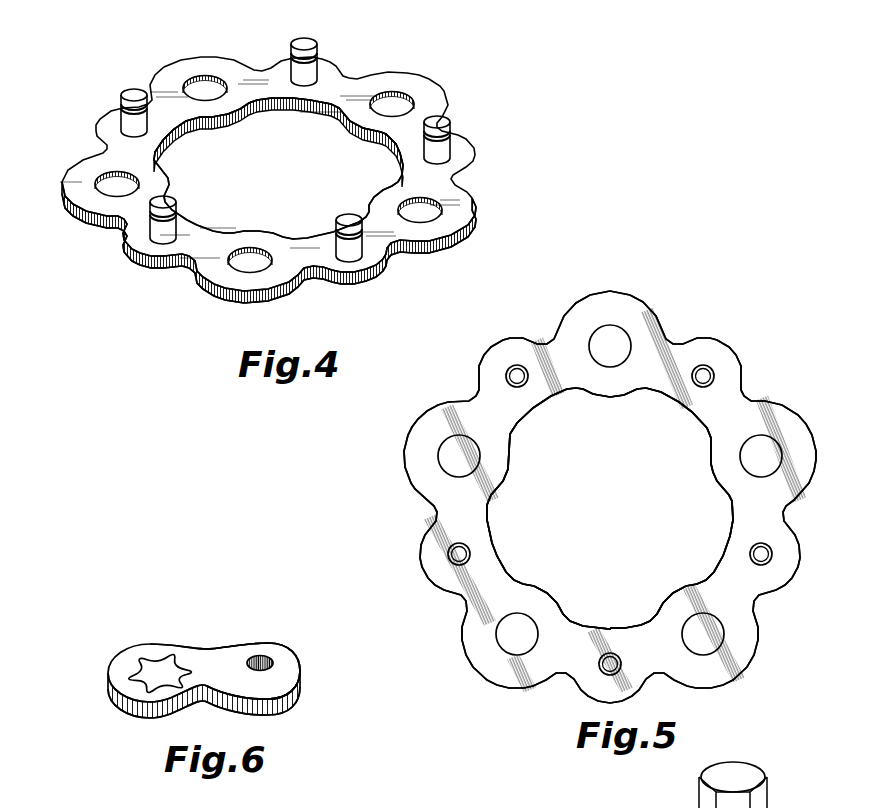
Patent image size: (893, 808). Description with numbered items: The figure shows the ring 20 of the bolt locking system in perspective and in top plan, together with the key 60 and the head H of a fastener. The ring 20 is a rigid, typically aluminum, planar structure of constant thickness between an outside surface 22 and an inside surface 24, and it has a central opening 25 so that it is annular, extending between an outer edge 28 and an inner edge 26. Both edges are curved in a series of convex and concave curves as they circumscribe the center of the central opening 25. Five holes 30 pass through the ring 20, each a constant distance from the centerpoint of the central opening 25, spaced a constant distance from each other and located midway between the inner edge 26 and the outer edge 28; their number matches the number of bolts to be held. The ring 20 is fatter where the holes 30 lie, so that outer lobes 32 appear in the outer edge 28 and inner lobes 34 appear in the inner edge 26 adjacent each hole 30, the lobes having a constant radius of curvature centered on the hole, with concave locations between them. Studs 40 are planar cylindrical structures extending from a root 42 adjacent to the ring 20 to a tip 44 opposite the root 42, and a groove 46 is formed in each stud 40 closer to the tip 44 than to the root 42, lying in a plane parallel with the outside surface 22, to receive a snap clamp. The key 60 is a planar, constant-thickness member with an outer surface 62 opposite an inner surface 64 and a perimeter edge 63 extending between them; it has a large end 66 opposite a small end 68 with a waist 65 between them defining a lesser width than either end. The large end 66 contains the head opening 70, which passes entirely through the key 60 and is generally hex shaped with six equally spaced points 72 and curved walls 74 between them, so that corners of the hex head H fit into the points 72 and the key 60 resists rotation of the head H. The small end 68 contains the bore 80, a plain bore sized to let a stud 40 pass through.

In FIG. 4, the ring 20 is at (288, 184).
In FIG. 5, the ring 20 is at (619, 459).
In FIG. 4, the outside surface 22 is at (250, 80).
In FIG. 5, the outside surface 22 is at (502, 417).
In FIG. 4, the inside surface 24 is at (207, 292).
In FIG. 4, the central opening 25 is at (280, 186).
In FIG. 5, the central opening 25 is at (624, 513).
In FIG. 4, the inner edge 26 is at (289, 107).
In FIG. 5, the inner edge 26 is at (560, 395).
In FIG. 4, the outer edge 28 is at (352, 74).
In FIG. 5, the outer edge 28 is at (553, 330).
In FIG. 4, the holes 30 is at (195, 87).
In FIG. 5, the holes 30 is at (621, 356).
In FIG. 4, the outer lobes 32 is at (250, 302).
In FIG. 5, the outer lobes 32 is at (812, 432).
In FIG. 4, the inner lobes 34 is at (247, 229).
In FIG. 5, the inner lobes 34 is at (712, 485).
In FIG. 4, the studs 40 is at (288, 150).
In FIG. 5, the studs 40 is at (508, 369).
In FIG. 4, the root 42 is at (130, 137).
In FIG. 4, the tip 44 is at (130, 99).
In FIG. 4, the groove 46 is at (126, 111).
In FIG. 6, the key 60 is at (221, 664).
In FIG. 6, the outer surface 62 is at (245, 650).
In FIG. 6, the perimeter edge 63 is at (118, 702).
In FIG. 6, the inner surface 64 is at (135, 716).
In FIG. 6, the waist 65 is at (213, 649).
In FIG. 6, the large end 66 is at (123, 658).
In FIG. 6, the small end 68 is at (287, 653).
In FIG. 6, the head opening 70 is at (158, 632).
In FIG. 6, the points 72 is at (160, 632).
In FIG. 6, the curved walls 74 is at (188, 665).
In FIG. 6, the bore 80 is at (266, 658).
In FIG. 5, the head H is at (739, 770).